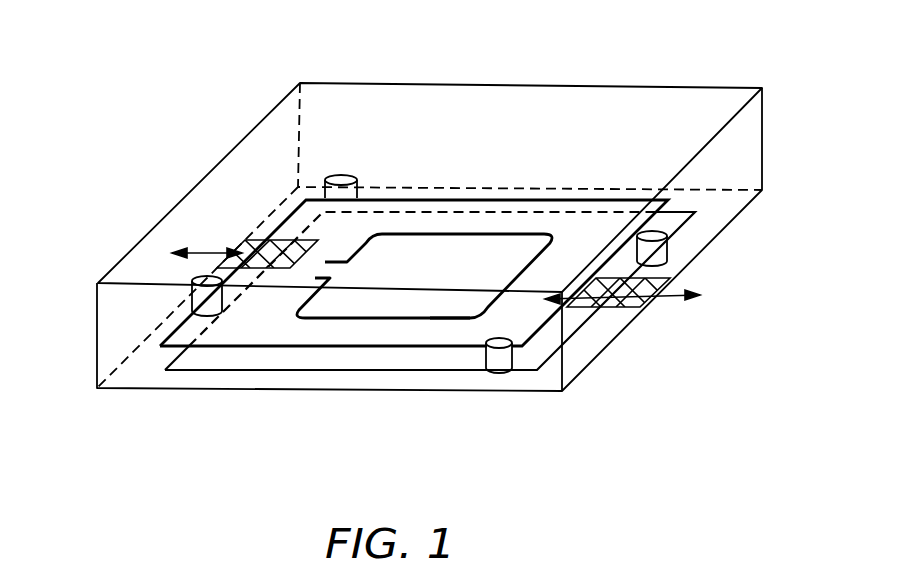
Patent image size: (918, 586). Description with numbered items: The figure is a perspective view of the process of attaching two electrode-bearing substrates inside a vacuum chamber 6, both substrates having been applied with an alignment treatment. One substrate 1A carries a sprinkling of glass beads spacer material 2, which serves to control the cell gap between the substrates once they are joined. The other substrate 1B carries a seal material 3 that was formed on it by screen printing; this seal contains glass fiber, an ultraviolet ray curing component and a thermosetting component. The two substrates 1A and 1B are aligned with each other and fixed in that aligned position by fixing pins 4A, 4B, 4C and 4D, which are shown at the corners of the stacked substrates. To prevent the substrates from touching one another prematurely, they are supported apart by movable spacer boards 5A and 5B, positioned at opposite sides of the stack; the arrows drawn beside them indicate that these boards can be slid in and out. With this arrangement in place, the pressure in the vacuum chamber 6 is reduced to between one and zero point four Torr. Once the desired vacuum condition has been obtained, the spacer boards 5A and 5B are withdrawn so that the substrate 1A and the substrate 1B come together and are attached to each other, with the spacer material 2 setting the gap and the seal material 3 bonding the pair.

The substrate 1A is at (430, 205).
The substrate 1B is at (343, 362).
The spacer material 2 is at (496, 253).
The seal material 3 is at (450, 320).
The fixing pin 4A is at (512, 360).
The fixing pin 4B is at (664, 247).
The fixing pin 4C is at (341, 175).
The fixing pin 4D is at (196, 297).
The movable spacer board 5A is at (643, 310).
The movable spacer board 5B is at (240, 242).
The vacuum chamber 6 is at (262, 132).